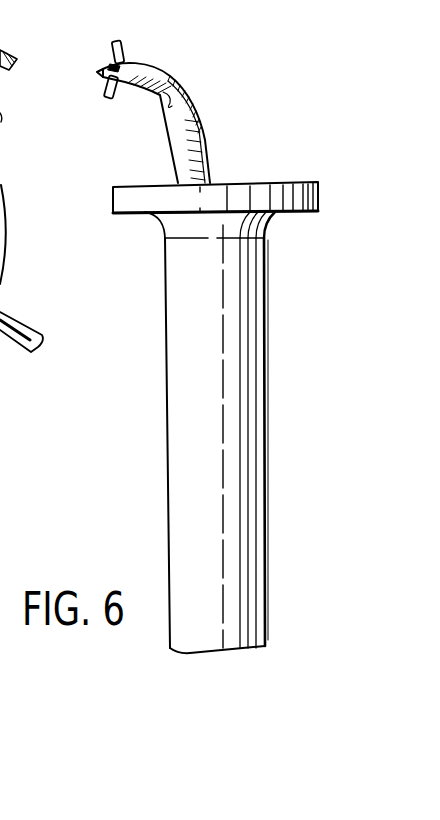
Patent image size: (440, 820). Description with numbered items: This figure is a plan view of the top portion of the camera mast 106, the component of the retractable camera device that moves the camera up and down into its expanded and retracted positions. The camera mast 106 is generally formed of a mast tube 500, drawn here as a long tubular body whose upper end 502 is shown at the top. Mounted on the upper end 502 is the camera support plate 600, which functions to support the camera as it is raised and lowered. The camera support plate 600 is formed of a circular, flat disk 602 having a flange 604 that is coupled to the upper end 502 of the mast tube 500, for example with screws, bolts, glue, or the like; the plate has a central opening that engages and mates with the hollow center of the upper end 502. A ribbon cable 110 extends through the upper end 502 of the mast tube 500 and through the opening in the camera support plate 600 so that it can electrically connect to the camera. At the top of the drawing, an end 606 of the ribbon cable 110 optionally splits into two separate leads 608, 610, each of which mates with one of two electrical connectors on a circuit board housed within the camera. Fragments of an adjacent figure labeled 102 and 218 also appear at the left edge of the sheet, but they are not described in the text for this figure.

The body of adjacent figure 102 is at (0, 187).
The rod of adjacent figure 218 is at (17, 328).
The camera mast 106 is at (263, 326).
The ribbon cable 110 is at (193, 108).
The mast tube 500 is at (262, 443).
The upper end 502 is at (193, 268).
The camera support plate 600 is at (273, 183).
The circular, flat disk 602 is at (123, 200).
The flange 604 is at (176, 221).
The end 606 is at (104, 72).
The lead 608 is at (117, 90).
The lead 610 is at (124, 43).